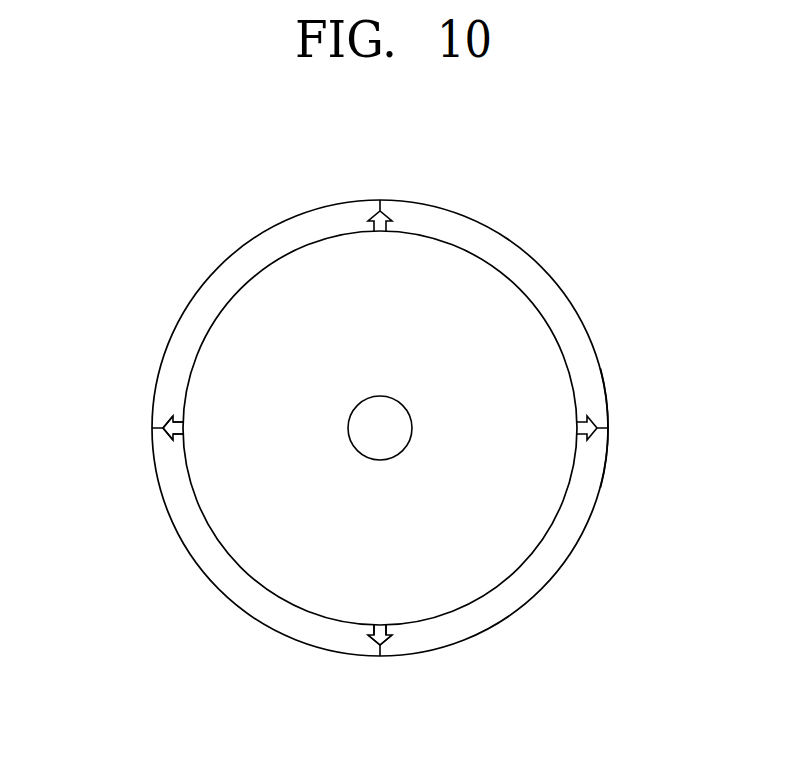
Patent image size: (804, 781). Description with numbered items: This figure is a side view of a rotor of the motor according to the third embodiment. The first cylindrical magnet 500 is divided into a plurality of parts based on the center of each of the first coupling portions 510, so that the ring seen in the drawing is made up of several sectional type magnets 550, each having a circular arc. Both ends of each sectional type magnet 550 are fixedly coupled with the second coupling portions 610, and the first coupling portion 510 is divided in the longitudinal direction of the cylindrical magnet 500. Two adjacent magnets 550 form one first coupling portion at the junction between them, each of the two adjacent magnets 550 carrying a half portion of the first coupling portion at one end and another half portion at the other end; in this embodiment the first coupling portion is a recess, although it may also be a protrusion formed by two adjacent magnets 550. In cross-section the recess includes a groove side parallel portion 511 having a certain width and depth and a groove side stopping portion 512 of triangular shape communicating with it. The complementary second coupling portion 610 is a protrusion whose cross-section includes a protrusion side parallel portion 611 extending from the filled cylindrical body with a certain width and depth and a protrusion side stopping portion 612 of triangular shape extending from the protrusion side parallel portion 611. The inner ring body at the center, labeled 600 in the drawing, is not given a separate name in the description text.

The first cylindrical magnet 500 is at (727, 397).
The first coupling portion 510 is at (467, 713).
The groove side parallel portion 511 is at (384, 636).
The groove side stopping portion 512 is at (354, 688).
The sectional type magnet 550 is at (608, 393).
The ring member 600 is at (240, 576).
The second coupling portion 610 is at (66, 412).
The protrusion side parallel portion 611 is at (173, 434).
The protrusion side stopping portion 612 is at (161, 426).